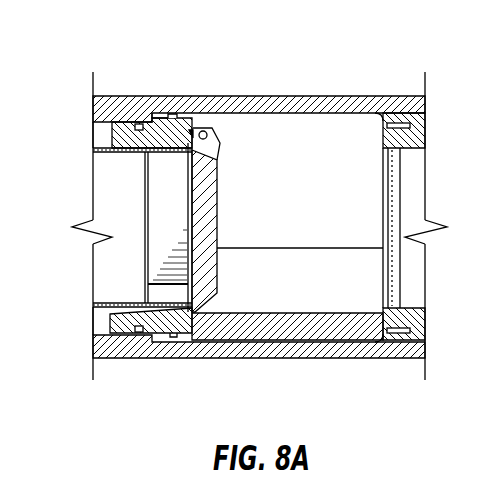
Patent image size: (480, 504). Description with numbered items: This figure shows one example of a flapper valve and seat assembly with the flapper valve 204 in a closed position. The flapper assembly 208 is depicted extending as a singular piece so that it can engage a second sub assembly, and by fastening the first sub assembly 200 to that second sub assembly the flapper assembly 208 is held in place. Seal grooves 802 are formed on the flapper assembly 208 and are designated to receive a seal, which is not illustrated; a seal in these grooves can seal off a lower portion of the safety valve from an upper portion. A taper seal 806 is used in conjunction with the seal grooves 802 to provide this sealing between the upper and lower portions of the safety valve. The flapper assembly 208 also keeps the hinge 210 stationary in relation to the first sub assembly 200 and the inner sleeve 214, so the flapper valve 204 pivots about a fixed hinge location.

The first sub assembly 200 is at (388, 95).
The seal grooves 802 is at (133, 123).
The taper seal 806 is at (165, 116).
The flapper assembly 208 is at (168, 112).
The hinge 210 is at (208, 133).
The flapper valve 204 is at (217, 213).
The inner sleeve 214 is at (112, 202).